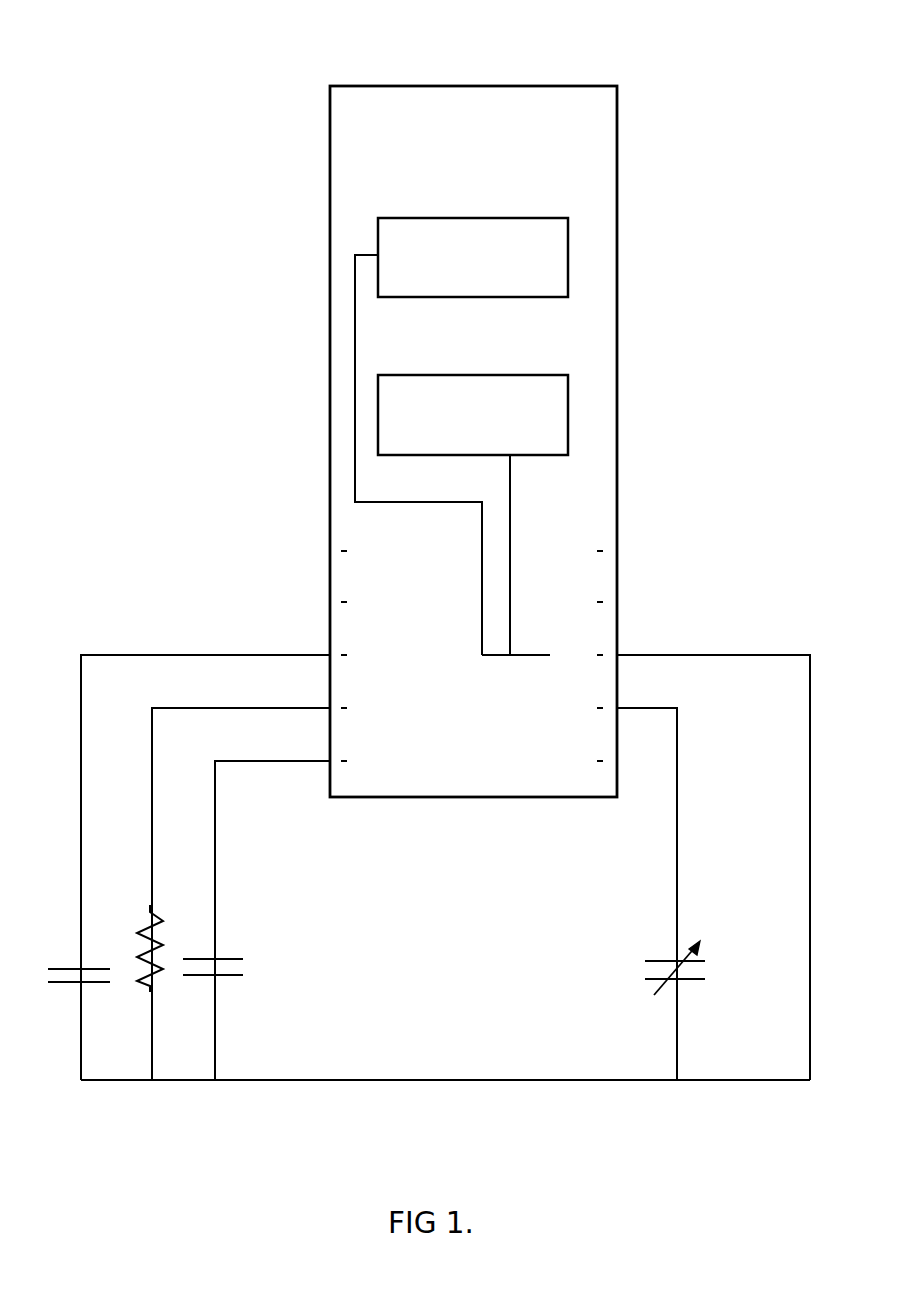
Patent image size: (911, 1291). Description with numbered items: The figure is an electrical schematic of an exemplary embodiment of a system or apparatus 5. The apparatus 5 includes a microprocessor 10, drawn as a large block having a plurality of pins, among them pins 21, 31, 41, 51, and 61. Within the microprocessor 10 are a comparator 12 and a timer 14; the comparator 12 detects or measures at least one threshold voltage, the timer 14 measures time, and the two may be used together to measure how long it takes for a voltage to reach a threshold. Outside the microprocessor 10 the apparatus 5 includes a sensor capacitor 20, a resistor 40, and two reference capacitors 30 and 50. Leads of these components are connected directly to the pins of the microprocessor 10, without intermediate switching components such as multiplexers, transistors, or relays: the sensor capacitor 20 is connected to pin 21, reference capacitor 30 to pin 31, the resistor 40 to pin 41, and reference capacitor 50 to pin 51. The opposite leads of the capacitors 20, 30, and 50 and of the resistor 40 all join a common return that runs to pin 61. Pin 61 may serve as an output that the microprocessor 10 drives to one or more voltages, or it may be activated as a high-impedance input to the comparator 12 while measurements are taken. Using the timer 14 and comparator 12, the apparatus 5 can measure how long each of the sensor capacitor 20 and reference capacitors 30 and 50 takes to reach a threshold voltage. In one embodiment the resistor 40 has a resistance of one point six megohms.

The apparatus 5 is at (158, 74).
The microprocessor 10 is at (618, 133).
The comparator 12 is at (555, 298).
The timer 14 is at (549, 456).
The sensor capacitor 20 is at (670, 987).
The pin 21 is at (594, 707).
The reference capacitor 30 is at (204, 978).
The pin 31 is at (350, 760).
The resistor 40 is at (139, 982).
The pin 41 is at (350, 707).
The reference capacitor 50 is at (74, 987).
The pin 51 is at (350, 655).
The common pin 61 is at (594, 655).